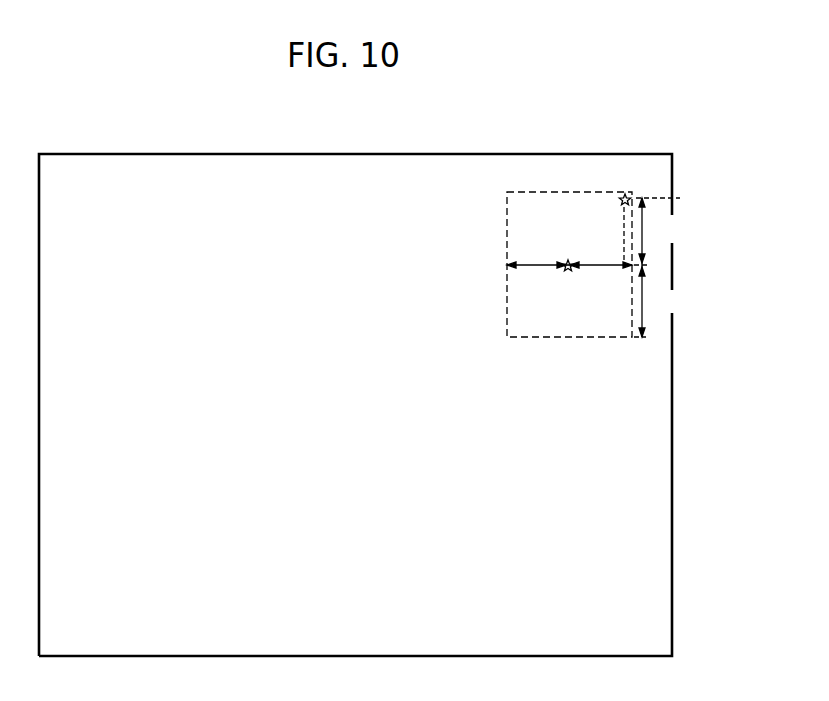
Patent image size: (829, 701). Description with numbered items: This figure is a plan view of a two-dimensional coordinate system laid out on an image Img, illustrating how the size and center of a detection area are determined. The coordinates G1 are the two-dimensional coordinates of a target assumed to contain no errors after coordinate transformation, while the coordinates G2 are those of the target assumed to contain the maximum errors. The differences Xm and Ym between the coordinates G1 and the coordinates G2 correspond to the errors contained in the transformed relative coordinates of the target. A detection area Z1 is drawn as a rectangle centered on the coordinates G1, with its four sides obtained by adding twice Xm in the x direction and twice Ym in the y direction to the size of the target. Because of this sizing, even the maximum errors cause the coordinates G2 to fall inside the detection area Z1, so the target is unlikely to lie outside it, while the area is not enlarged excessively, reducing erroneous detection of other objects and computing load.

The image Img is at (673, 411).
The detection area Z1 is at (506, 228).
The target coordinates assumed to contain no errors G1 is at (567, 273).
The target coordinates assumed to contain the maximum errors G2 is at (621, 192).
The difference in the x direction Xm is at (569, 281).
The difference in the y direction Ym is at (658, 267).